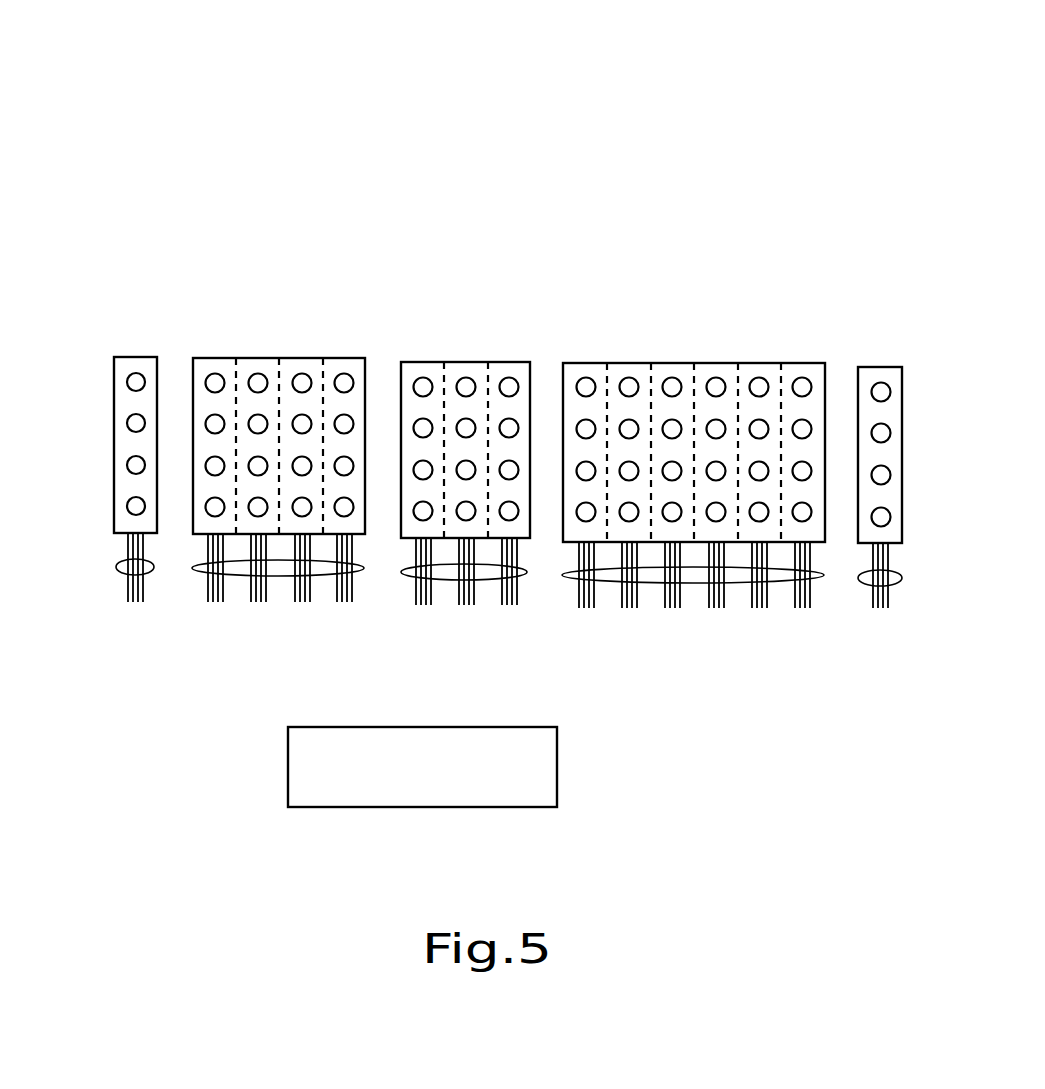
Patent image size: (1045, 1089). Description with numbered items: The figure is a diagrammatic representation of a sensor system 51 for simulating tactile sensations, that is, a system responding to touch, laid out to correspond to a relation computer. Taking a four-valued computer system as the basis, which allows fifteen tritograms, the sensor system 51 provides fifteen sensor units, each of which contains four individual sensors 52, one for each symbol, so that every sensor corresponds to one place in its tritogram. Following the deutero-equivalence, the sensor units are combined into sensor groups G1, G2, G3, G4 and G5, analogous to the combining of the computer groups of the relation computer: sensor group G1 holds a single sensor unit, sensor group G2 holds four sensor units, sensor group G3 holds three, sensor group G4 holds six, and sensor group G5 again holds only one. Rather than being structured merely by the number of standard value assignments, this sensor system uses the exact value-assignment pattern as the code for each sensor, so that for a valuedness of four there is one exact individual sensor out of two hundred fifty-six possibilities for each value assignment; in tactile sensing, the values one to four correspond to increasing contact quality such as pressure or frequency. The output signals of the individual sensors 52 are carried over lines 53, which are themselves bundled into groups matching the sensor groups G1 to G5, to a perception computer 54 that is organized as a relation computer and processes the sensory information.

The sensor system 51 is at (391, 66).
The individual sensors 52 is at (127, 382).
The lines 53 is at (117, 567).
The perception computer 54 is at (557, 780).
The sensor group G1 is at (134, 298).
The sensor group G2 is at (266, 300).
The sensor group G3 is at (461, 303).
The sensor group G4 is at (679, 305).
The sensor group G5 is at (876, 308).